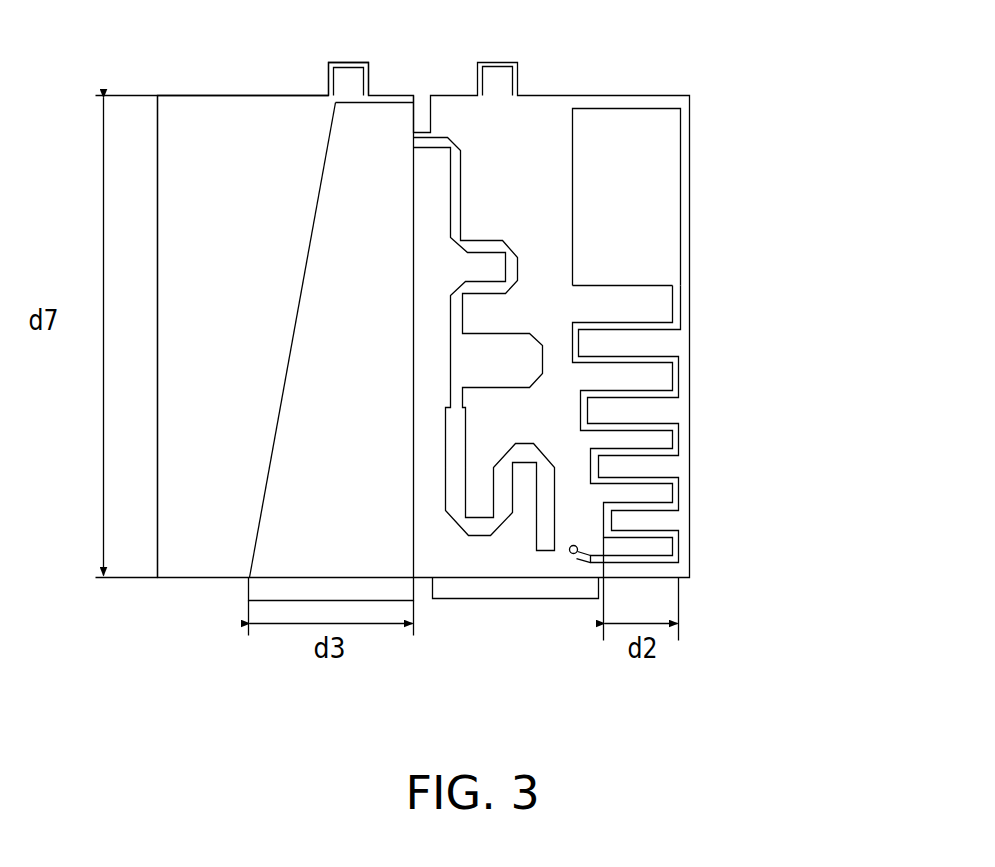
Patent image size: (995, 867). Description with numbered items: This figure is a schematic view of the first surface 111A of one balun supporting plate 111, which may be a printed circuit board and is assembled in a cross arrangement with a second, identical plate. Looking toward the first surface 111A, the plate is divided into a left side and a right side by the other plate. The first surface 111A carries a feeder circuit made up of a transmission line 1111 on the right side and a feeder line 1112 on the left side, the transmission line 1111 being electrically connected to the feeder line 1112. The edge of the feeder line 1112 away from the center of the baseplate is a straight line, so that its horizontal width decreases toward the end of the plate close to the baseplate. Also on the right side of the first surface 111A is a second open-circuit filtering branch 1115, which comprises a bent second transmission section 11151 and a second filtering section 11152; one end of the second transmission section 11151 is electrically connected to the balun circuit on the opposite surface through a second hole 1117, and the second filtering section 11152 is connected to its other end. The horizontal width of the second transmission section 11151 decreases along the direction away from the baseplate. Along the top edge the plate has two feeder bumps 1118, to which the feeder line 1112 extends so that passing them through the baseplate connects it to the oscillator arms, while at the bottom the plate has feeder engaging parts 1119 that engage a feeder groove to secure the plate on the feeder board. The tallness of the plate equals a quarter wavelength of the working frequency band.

The balun supporting plate 111 is at (700, 79).
The first surface 111A is at (188, 133).
The feeder bump 1118 is at (323, 80).
The feeder line 1112 is at (315, 542).
The feeder engaging part 1119 is at (450, 590).
The transmission line 1111 is at (505, 512).
The second hole 1117 is at (575, 553).
The second open-circuit filtering branch 1115 is at (722, 343).
The second transmission section 11151 is at (674, 343).
The second filtering section 11152 is at (681, 257).